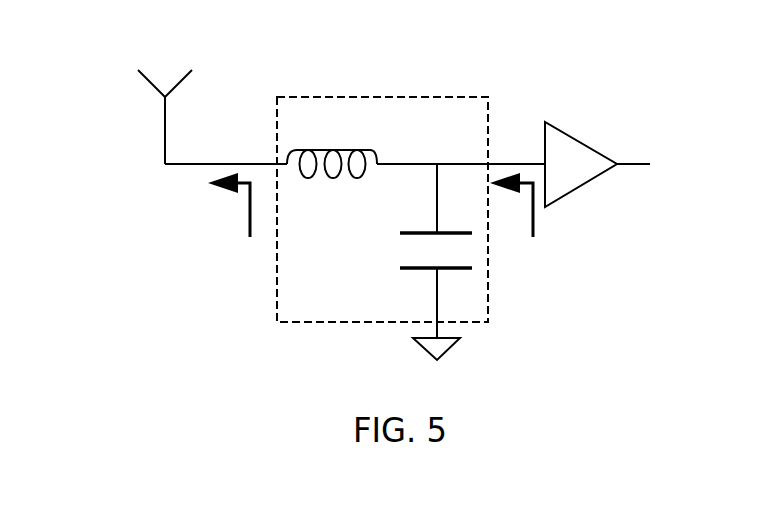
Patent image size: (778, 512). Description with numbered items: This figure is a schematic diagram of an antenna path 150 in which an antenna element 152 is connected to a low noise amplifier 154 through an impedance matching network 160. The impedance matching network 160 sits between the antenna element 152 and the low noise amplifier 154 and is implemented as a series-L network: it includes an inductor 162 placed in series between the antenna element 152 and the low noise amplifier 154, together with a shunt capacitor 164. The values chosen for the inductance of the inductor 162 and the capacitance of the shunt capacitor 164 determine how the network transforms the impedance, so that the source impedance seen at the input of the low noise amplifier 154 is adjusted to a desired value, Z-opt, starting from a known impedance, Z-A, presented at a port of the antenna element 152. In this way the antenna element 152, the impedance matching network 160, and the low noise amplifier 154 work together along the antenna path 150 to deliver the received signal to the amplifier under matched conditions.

The antenna path 150 is at (118, 16).
The antenna element 152 is at (178, 80).
The low noise amplifier 154 is at (570, 133).
The impedance matching network 160 is at (438, 95).
The inductor 162 is at (360, 150).
The shunt capacitor 164 is at (422, 232).